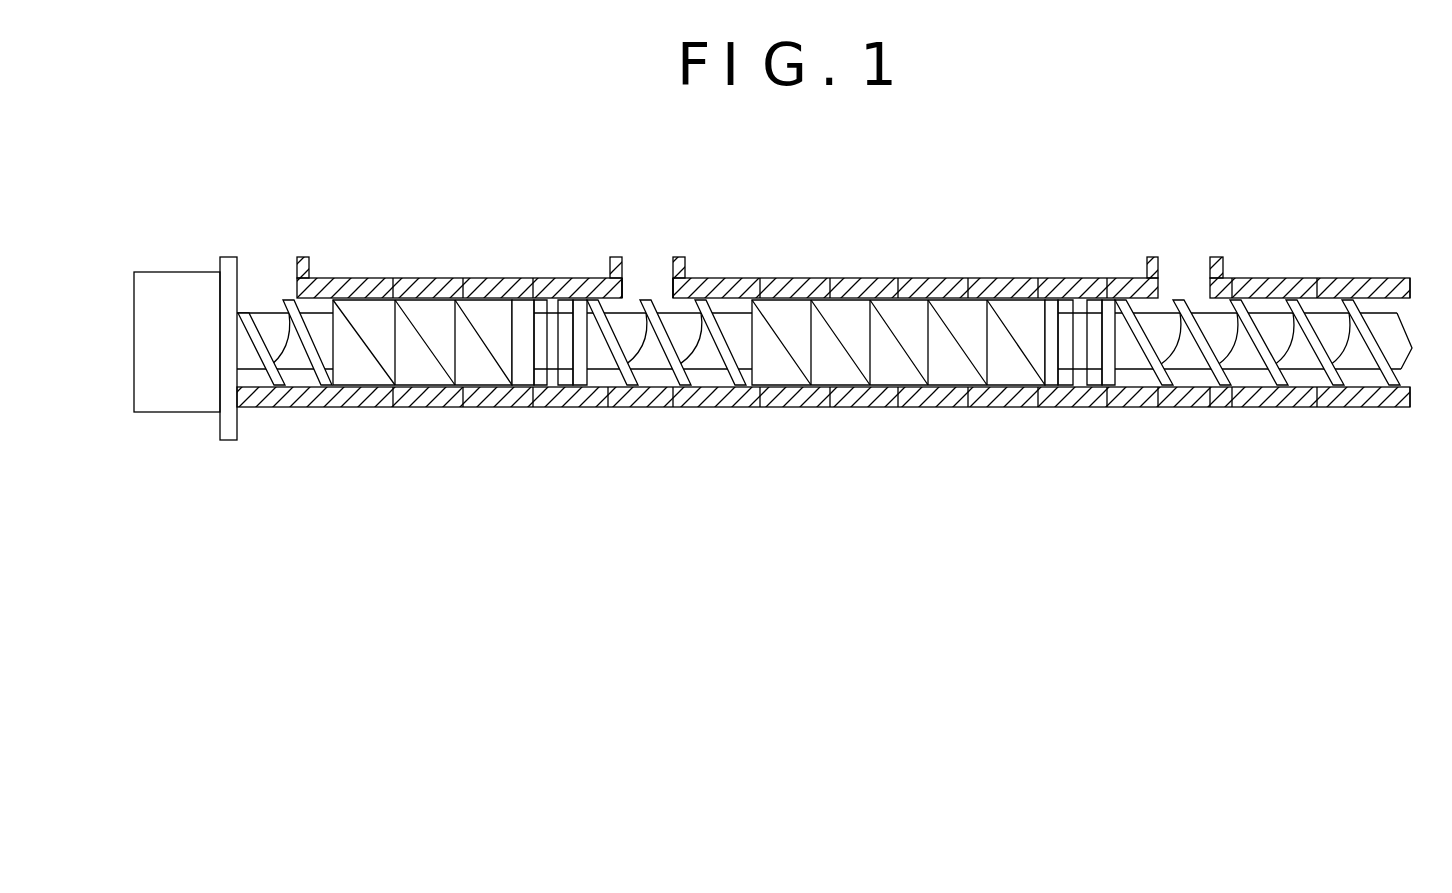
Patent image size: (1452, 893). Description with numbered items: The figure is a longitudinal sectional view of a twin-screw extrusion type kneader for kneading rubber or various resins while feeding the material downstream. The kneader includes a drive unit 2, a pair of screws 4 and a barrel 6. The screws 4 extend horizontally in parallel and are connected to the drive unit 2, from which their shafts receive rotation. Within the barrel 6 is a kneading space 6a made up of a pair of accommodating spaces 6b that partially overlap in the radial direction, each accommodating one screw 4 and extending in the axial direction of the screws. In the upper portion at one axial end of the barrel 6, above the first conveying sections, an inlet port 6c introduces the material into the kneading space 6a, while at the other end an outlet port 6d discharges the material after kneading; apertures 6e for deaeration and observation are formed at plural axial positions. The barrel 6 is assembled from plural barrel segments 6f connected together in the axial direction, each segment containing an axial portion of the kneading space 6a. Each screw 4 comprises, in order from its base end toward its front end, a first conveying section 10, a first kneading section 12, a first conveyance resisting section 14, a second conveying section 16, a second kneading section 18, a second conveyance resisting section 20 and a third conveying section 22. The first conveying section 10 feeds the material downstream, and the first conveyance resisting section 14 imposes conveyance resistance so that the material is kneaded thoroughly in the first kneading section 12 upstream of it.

The drive unit 2 is at (175, 272).
The screw 4 is at (836, 352).
The barrel 6 is at (834, 322).
The kneading space 6a is at (624, 302).
The accommodating space 6b is at (647, 288).
The inlet port 6c is at (297, 274).
The outlet port 6d is at (1412, 384).
The aperture 6e is at (617, 285).
The barrel segment 6f is at (358, 285).
The first conveying section 10 is at (282, 352).
The first kneading section 12 is at (424, 402).
The first conveyance resisting section 14 is at (547, 352).
The second conveying section 16 is at (666, 402).
The second kneading section 18 is at (898, 402).
The second conveyance resisting section 20 is at (1090, 352).
The third conveying section 22 is at (1263, 402).